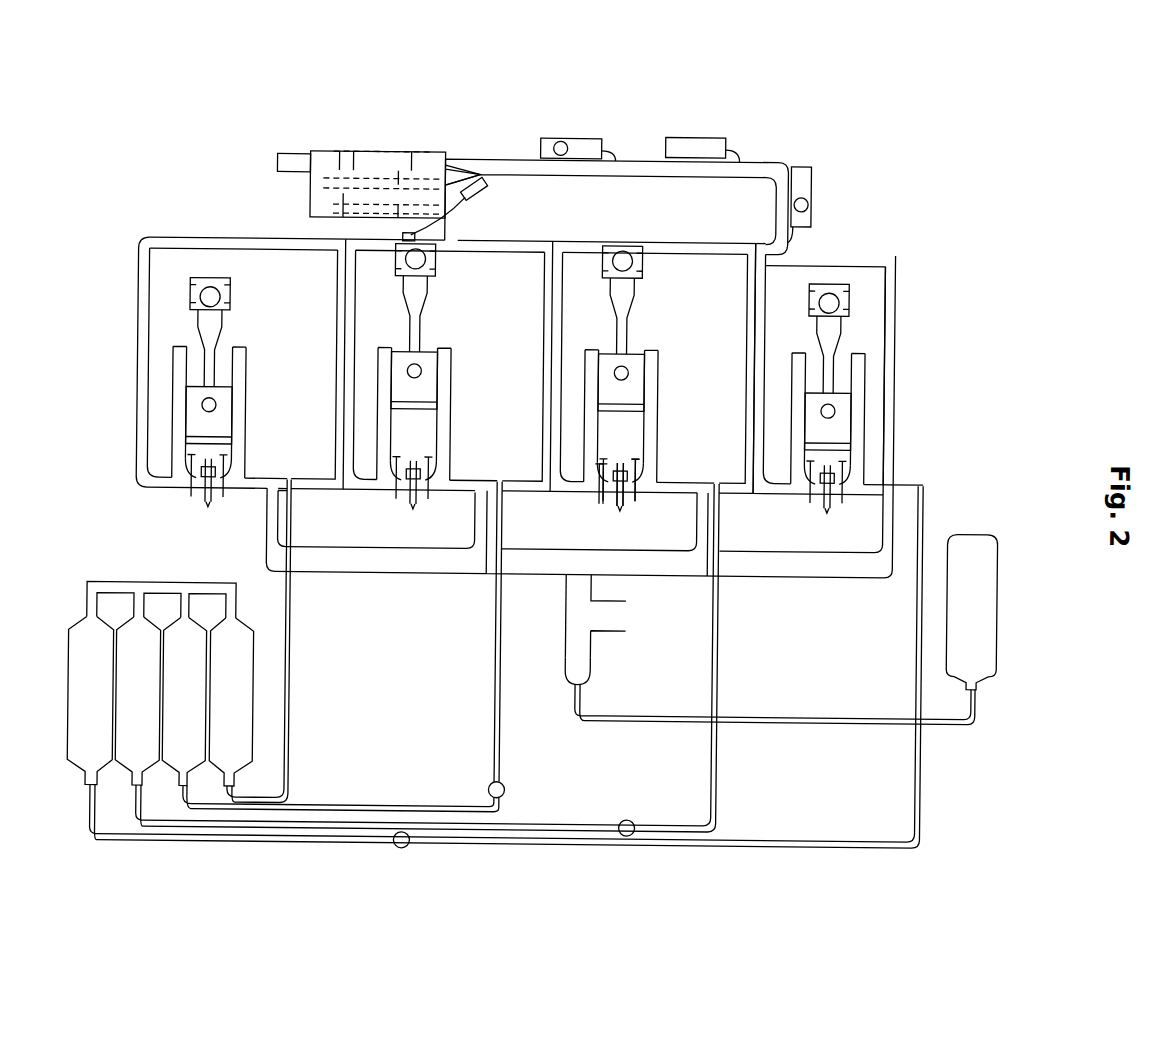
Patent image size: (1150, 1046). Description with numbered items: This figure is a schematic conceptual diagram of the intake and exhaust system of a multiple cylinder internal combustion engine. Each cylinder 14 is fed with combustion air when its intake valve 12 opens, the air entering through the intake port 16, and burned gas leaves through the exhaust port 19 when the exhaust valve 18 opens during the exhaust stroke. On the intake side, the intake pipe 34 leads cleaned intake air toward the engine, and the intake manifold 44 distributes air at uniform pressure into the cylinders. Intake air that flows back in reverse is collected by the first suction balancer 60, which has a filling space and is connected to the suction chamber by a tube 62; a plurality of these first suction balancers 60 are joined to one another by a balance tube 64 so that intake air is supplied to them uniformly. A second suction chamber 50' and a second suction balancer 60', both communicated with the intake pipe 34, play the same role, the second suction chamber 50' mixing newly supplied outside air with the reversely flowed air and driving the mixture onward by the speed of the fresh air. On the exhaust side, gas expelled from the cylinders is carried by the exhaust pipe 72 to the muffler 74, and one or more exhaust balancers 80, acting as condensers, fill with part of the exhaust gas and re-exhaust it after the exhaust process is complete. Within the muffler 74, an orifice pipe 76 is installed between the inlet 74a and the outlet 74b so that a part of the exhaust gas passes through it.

The intake valve 12 is at (624, 500).
The cylinder 14 is at (660, 422).
The intake port 16 is at (648, 498).
The exhaust valve 18 is at (602, 502).
The exhaust port 19 is at (592, 495).
The intake pipe 34 is at (628, 594).
The intake manifold 44 is at (567, 596).
The second suction chamber 50' is at (552, 666).
The first suction balancer 60 is at (161, 647).
The second suction balancer 60' is at (1000, 612).
The tube 62 is at (295, 685).
The balance tube 64 is at (192, 592).
The exhaust pipe 72 is at (516, 160).
The muffler 74 is at (380, 152).
The inlet 74a is at (404, 234).
The outlet 74b is at (292, 158).
The orifice pipe 76 is at (450, 160).
The exhaust balancer 80 is at (690, 146).